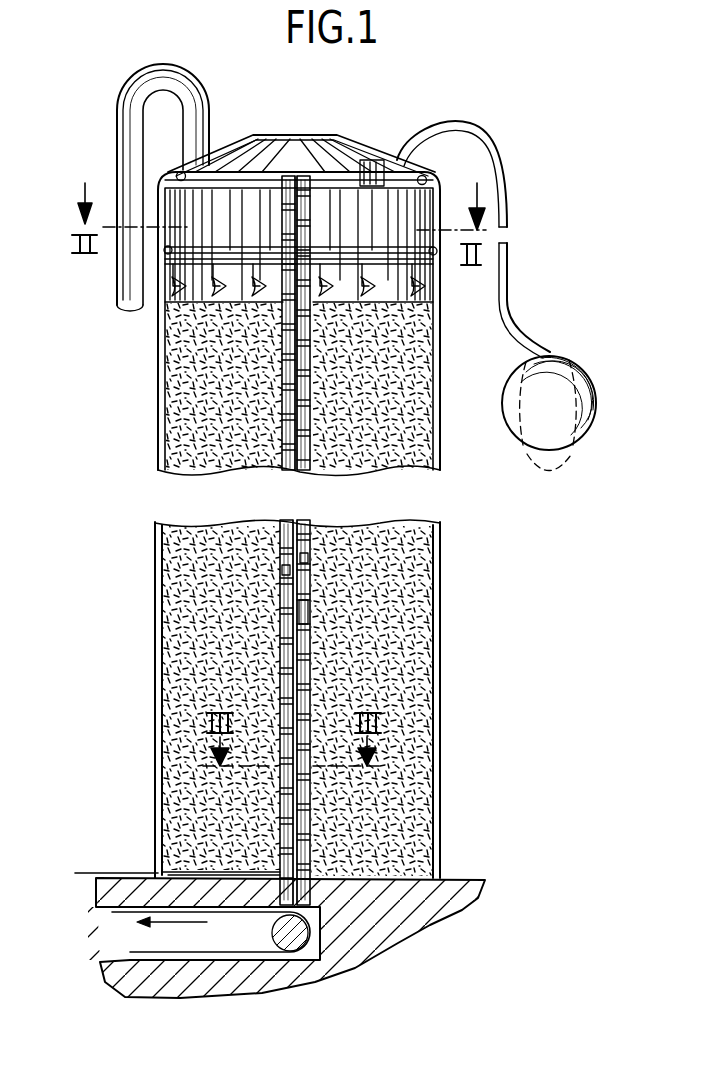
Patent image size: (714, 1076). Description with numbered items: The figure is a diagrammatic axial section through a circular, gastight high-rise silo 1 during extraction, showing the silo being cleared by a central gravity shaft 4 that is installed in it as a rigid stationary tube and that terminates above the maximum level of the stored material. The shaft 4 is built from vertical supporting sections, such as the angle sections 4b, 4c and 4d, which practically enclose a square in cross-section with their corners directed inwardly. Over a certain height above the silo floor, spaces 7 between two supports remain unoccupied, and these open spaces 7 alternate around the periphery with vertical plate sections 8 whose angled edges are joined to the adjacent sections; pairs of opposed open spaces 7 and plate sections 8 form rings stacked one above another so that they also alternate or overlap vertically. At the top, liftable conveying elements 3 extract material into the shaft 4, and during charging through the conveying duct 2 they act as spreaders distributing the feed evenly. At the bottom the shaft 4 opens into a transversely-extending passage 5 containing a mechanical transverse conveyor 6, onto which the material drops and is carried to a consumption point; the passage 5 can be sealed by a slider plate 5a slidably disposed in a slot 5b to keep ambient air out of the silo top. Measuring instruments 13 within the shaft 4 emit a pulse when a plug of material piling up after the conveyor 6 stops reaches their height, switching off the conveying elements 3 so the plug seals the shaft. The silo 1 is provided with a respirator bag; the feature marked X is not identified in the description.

The high-rise silo 1 is at (440, 377).
The conveying duct 2 is at (196, 110).
The conveying elements 3 is at (224, 262).
The gravity shaft 4 is at (313, 355).
The vertical supporting section 4b is at (283, 548).
The vertical supporting section 4c is at (305, 561).
The vertical supporting section 4d is at (312, 608).
The transversely-extending passage 5 is at (312, 915).
The slider plate 5a is at (97, 873).
The slot 5b is at (203, 863).
The mechanical transverse conveyor 6 is at (162, 952).
The open spaces 7 is at (310, 446).
The vertical plate sections 8 is at (288, 407).
The measuring instruments 13 is at (303, 557).
The ball X is at (578, 375).